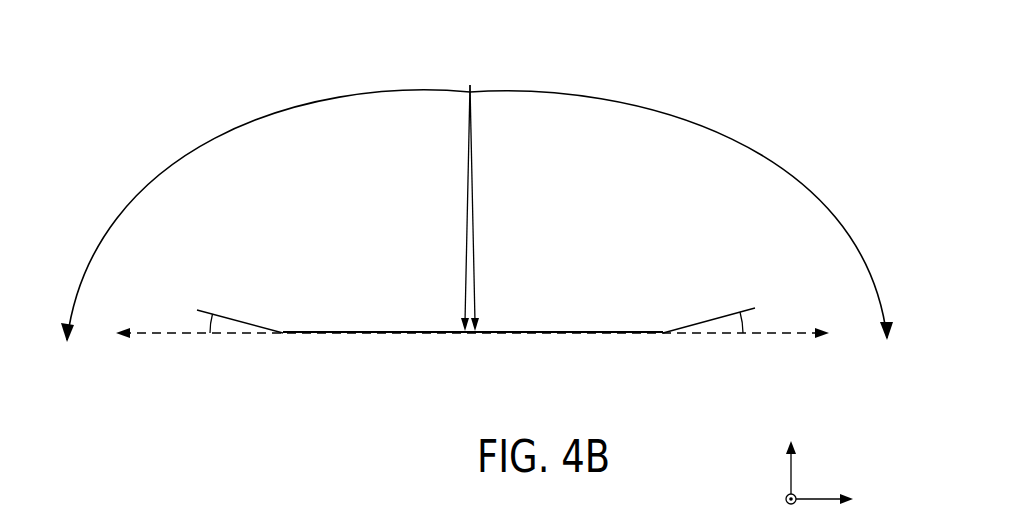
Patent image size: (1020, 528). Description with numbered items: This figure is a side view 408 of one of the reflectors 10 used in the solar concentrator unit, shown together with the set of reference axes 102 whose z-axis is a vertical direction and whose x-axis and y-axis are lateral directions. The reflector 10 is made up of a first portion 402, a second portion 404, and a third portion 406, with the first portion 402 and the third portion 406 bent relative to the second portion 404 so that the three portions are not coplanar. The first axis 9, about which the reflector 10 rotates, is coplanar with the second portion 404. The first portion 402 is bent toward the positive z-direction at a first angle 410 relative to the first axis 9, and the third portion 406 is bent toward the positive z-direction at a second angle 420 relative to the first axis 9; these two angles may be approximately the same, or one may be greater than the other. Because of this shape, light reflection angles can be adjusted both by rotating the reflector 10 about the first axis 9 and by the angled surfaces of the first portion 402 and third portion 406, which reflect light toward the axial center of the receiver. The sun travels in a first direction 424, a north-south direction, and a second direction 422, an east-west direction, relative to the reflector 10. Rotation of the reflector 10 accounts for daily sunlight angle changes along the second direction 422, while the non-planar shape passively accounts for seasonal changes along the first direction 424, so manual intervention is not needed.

The side view 408 is at (137, 40).
The first direction 424 is at (650, 112).
The second direction 422 is at (465, 212).
The first axis 9 is at (243, 337).
The reflector 10 is at (415, 262).
The first portion 402 is at (226, 312).
The second portion 404 is at (552, 331).
The third portion 406 is at (722, 315).
The first angle 410 is at (208, 324).
The second angle 420 is at (743, 321).
The reference axes 102 is at (846, 463).